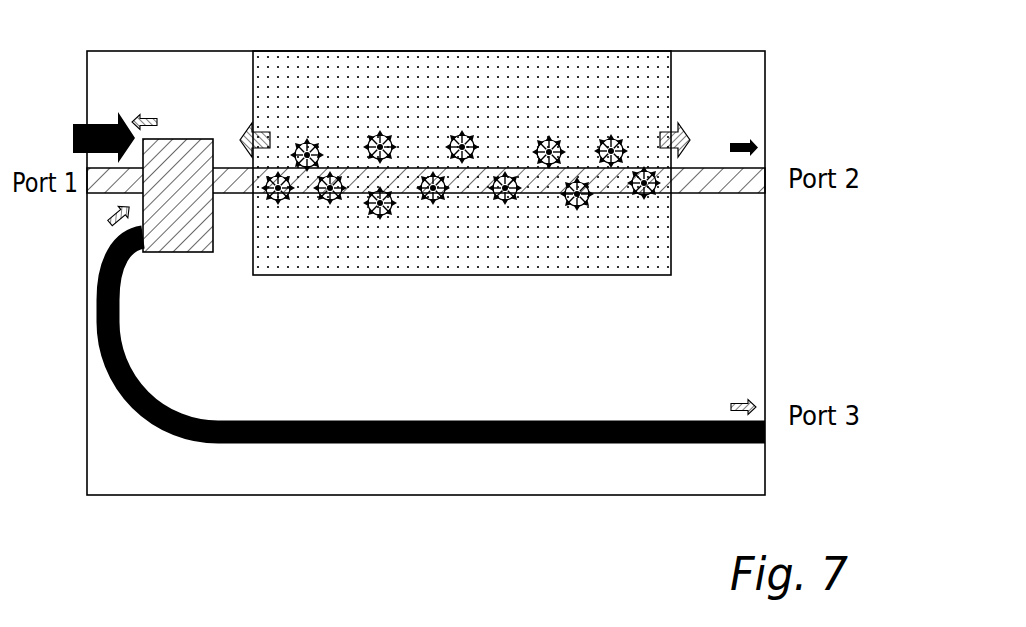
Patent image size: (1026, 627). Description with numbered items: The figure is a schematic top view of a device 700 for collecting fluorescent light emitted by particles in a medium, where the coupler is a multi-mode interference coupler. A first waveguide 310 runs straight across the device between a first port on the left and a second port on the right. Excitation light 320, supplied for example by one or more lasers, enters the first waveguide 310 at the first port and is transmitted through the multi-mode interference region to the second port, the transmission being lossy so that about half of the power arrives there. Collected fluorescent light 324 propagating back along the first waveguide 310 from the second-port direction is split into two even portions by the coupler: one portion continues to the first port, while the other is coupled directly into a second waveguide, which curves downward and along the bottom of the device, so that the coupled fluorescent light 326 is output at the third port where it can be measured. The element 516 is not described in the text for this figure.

The device 700 is at (822, 66).
The first waveguide 310 is at (723, 192).
The excitation light 320 is at (86, 123).
The collected fluorescent light 324 is at (250, 131).
The fluorescent light 326 is at (112, 224).
The flow control valve block 516 is at (182, 140).